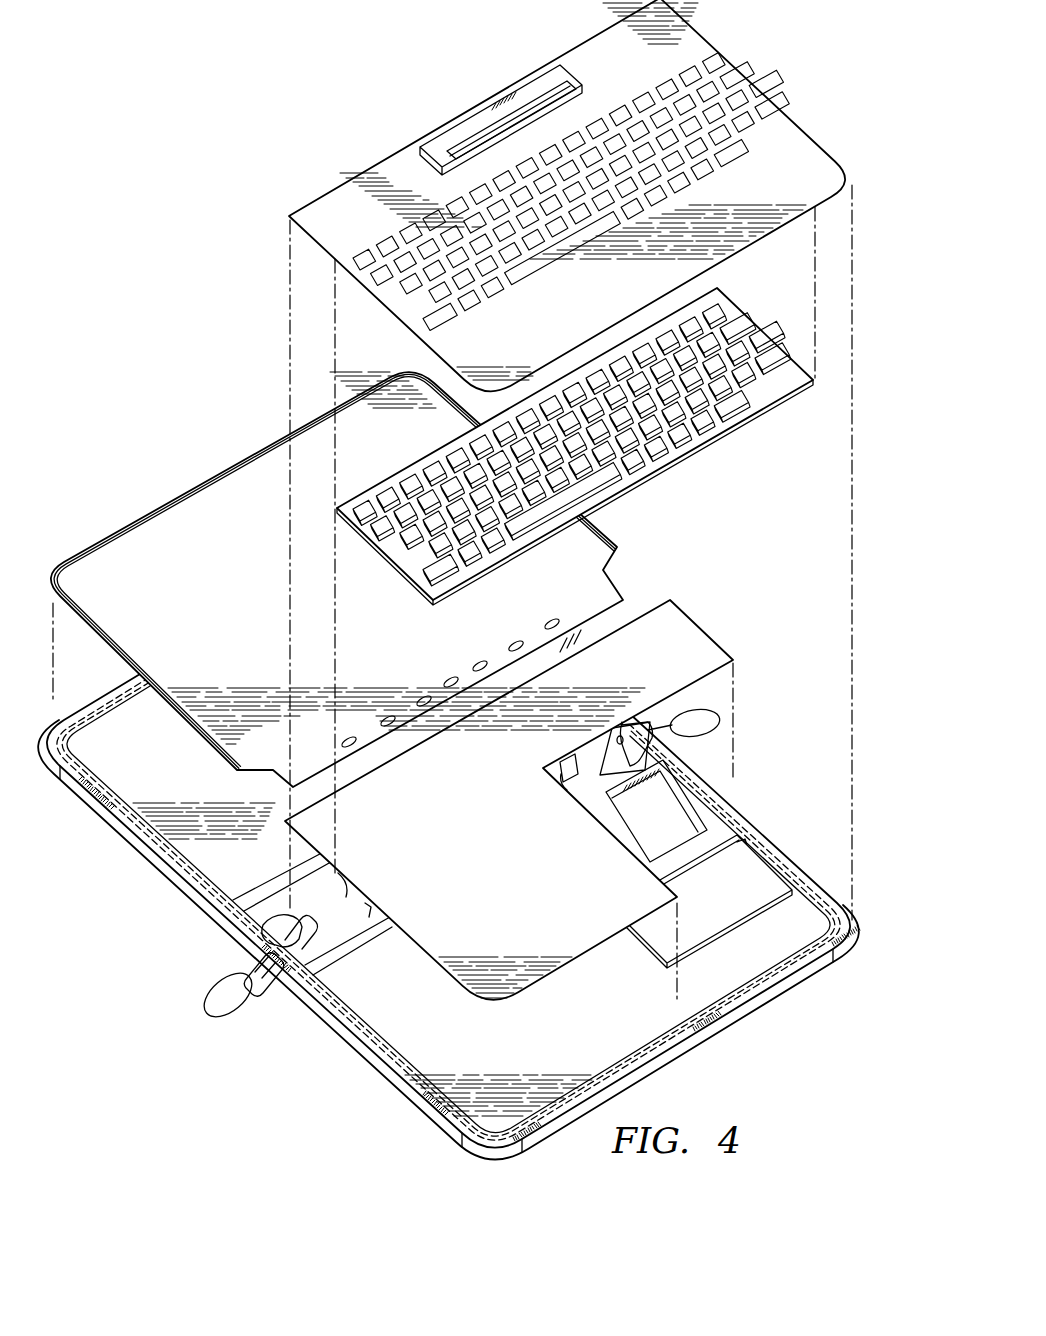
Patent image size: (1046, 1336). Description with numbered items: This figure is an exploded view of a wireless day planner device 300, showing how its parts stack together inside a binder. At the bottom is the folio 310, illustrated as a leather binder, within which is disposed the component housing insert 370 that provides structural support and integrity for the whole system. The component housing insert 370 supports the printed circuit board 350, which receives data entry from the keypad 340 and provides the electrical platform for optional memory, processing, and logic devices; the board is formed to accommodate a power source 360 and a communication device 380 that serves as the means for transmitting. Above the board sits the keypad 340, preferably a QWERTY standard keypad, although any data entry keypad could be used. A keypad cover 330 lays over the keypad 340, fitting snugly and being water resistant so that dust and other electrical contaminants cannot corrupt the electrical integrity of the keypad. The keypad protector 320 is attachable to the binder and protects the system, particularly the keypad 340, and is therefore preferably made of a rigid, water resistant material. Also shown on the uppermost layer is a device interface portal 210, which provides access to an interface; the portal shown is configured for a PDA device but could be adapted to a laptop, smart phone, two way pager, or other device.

The wireless day planner device 300 is at (353, 98).
The device interface portal 210 is at (473, 123).
The folio 310 is at (218, 860).
The keypad protector 320 is at (206, 500).
The keypad cover 330 is at (818, 147).
The keypad 340 is at (730, 423).
The printed circuit board 350 is at (693, 637).
The power source 360 is at (637, 828).
The component housing insert 370 is at (408, 1043).
The communication device 380 is at (713, 913).